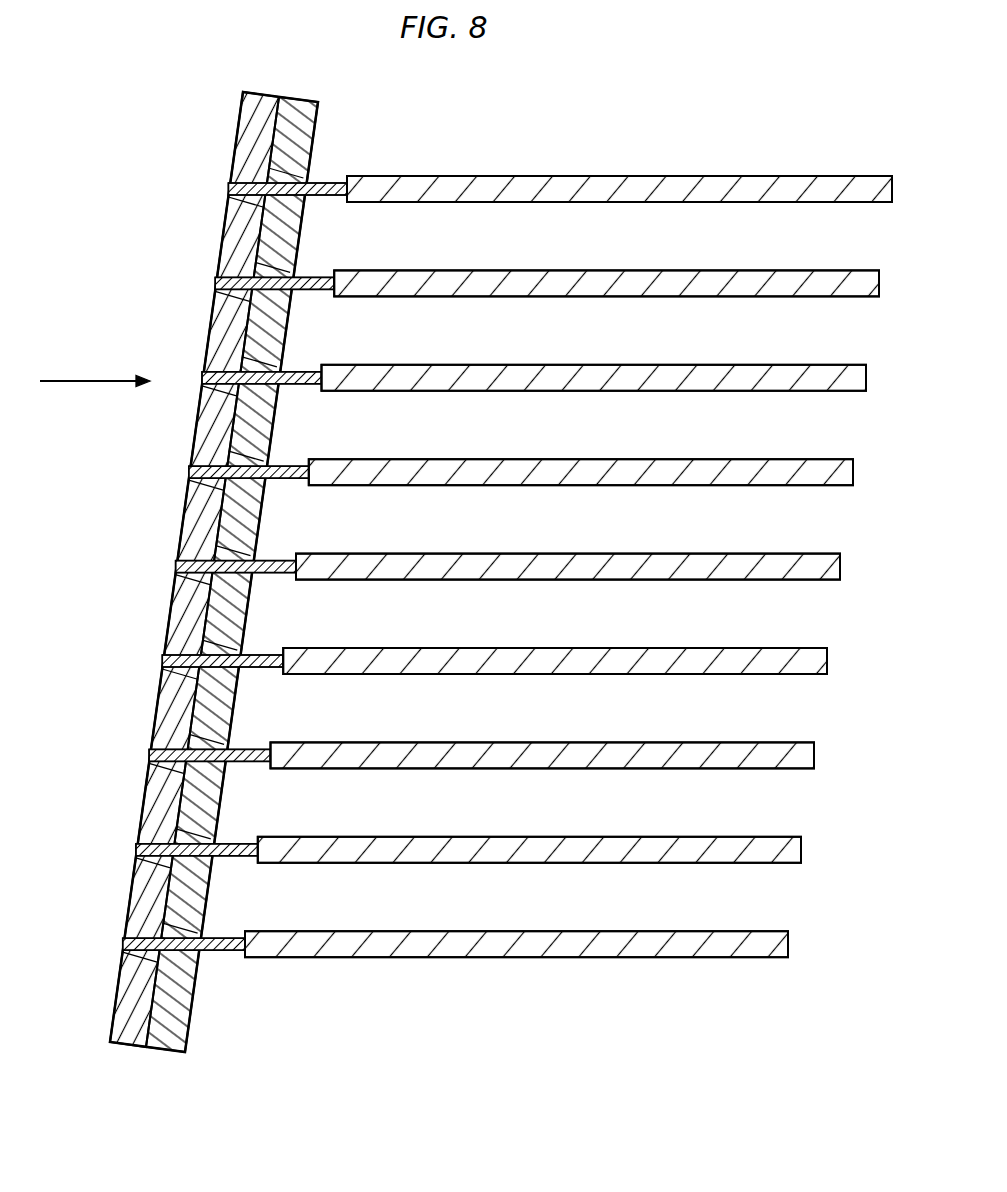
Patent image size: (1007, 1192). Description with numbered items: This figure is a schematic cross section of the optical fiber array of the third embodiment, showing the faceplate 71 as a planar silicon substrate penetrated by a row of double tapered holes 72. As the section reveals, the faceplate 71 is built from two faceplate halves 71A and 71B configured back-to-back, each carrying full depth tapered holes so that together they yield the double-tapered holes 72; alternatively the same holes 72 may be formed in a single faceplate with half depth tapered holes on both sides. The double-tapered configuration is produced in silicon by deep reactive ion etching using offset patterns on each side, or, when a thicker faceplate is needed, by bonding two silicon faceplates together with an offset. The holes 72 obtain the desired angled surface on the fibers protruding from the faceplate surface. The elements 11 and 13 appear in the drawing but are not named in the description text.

The plate / electrode sheet 11 is at (703, 177).
The direction of insertion (arrow) 13 is at (95, 407).
The faceplate 71 is at (147, 1052).
The faceplate half 71A is at (240, 145).
The faceplate half 71B is at (318, 140).
The double tapered hole 72 is at (283, 275).